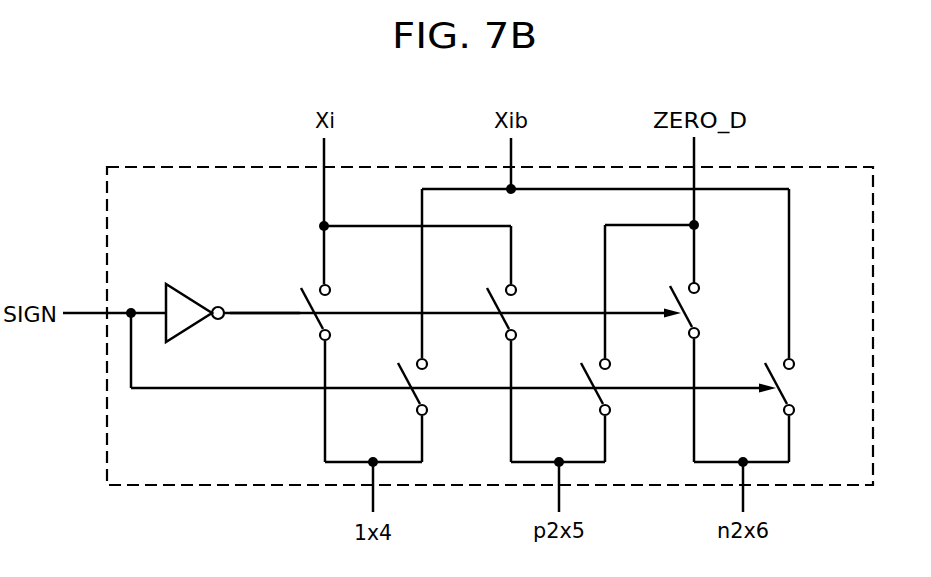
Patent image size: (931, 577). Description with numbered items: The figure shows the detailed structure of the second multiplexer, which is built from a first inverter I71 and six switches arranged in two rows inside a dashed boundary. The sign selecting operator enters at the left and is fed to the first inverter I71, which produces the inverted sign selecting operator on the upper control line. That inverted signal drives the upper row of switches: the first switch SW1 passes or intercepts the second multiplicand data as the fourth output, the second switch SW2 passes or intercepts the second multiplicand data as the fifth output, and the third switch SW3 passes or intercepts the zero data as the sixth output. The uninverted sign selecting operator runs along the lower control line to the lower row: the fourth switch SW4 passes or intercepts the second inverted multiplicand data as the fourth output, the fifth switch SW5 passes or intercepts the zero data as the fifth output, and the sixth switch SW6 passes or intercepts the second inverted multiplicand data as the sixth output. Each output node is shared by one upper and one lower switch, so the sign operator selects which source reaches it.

The first inverter I71 is at (191, 290).
The first switch SW1 is at (345, 310).
The second switch SW2 is at (532, 310).
The third switch SW3 is at (714, 308).
The fourth switch SW4 is at (442, 385).
The fifth switch SW5 is at (625, 385).
The sixth switch SW6 is at (809, 385).